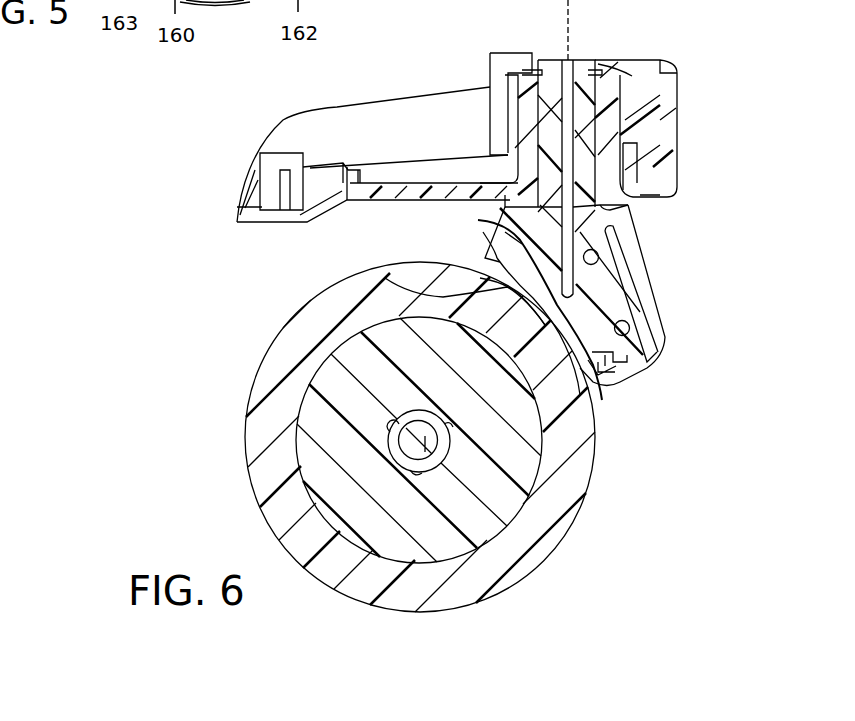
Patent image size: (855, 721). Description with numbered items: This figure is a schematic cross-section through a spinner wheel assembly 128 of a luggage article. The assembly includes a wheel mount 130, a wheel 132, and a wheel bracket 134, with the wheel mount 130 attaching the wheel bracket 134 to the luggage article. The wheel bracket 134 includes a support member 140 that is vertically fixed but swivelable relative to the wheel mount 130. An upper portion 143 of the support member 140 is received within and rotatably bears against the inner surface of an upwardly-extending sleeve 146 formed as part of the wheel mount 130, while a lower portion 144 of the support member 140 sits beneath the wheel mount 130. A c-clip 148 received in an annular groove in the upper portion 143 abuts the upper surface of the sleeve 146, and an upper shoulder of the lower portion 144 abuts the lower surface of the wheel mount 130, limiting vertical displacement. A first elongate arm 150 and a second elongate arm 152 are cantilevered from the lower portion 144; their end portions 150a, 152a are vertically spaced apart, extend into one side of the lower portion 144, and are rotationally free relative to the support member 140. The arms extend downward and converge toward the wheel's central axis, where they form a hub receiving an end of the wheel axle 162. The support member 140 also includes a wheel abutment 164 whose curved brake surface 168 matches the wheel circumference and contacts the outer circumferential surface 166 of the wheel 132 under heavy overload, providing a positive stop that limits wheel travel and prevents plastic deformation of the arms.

The spinner wheel assembly 128 is at (94, 158).
The wheel mount 130 is at (387, 110).
The wheel 132 is at (260, 440).
The wheel bracket 134 is at (658, 272).
The support member 140 is at (630, 237).
The upper portion 143 is at (583, 133).
The lower portion 144 is at (650, 315).
The sleeve 146 is at (643, 72).
The c-clip 148 is at (598, 64).
The first elongate arm 150 is at (407, 287).
The end portion 150a is at (599, 257).
The second elongate arm 152 is at (580, 352).
The end portion 152a is at (629, 328).
The wheel axle 162 is at (425, 452).
The wheel abutment 164 is at (487, 259).
The circumferential surface 166 is at (297, 320).
The curved brake surface 168 is at (505, 230).